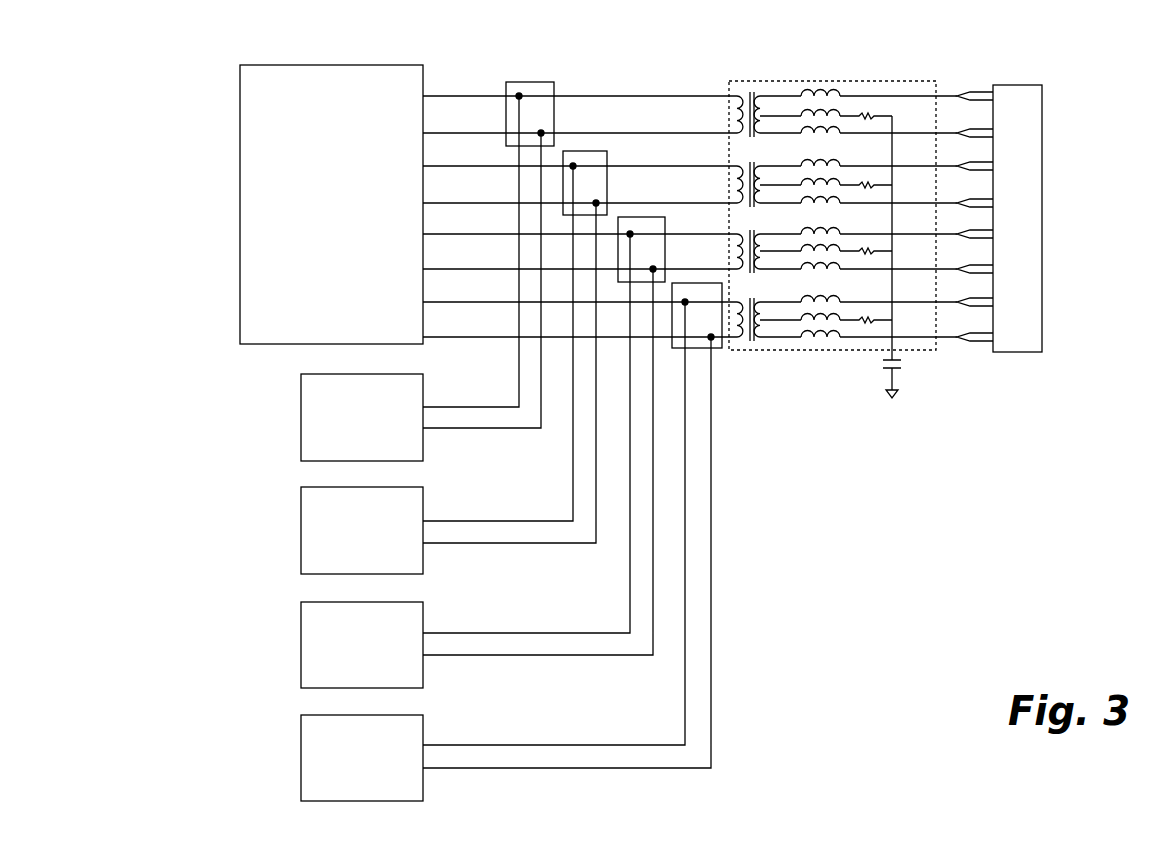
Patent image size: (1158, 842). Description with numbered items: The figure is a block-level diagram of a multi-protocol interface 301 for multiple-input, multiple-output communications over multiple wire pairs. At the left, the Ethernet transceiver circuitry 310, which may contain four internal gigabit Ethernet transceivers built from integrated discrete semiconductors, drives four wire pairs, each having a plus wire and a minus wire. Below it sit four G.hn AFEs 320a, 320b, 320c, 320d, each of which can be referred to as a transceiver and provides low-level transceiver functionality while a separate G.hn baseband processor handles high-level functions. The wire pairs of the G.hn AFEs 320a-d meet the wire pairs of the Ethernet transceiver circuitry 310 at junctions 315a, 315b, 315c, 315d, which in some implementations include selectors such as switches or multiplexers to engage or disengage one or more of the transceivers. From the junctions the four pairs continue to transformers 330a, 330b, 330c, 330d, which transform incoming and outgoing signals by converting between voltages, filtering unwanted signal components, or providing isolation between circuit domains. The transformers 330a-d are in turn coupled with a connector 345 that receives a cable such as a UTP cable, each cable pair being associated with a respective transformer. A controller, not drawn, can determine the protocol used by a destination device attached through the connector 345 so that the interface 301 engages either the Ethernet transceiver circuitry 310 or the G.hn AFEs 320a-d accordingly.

The multi-protocol interface 301 is at (206, 67).
The Ethernet transceiver circuitry 310 is at (240, 166).
The junction 315a is at (533, 82).
The junction 315b is at (585, 151).
The junction 315c is at (637, 217).
The junction 315d is at (713, 340).
The G.hn AFE 320a is at (301, 405).
The G.hn AFE 320b is at (301, 516).
The G.hn AFE 320c is at (301, 632).
The G.hn AFE 320d is at (301, 745).
The transformer 330a is at (749, 92).
The transformer 330b is at (758, 166).
The transformer 330c is at (758, 234).
The transformer 330d is at (758, 302).
The connector 345 is at (1026, 85).